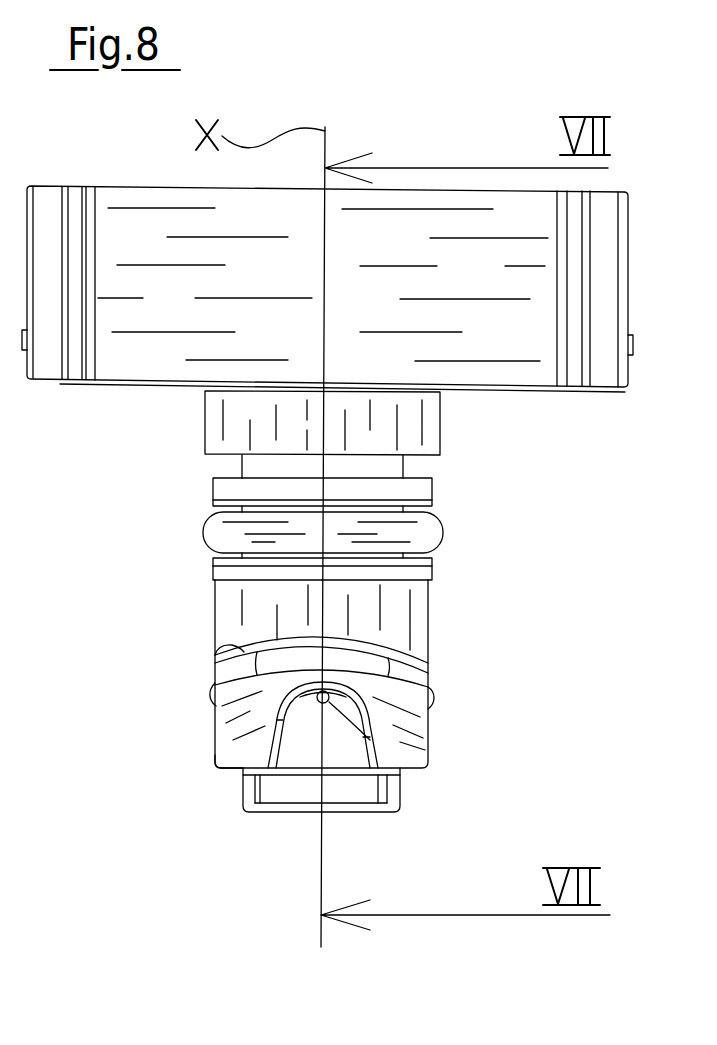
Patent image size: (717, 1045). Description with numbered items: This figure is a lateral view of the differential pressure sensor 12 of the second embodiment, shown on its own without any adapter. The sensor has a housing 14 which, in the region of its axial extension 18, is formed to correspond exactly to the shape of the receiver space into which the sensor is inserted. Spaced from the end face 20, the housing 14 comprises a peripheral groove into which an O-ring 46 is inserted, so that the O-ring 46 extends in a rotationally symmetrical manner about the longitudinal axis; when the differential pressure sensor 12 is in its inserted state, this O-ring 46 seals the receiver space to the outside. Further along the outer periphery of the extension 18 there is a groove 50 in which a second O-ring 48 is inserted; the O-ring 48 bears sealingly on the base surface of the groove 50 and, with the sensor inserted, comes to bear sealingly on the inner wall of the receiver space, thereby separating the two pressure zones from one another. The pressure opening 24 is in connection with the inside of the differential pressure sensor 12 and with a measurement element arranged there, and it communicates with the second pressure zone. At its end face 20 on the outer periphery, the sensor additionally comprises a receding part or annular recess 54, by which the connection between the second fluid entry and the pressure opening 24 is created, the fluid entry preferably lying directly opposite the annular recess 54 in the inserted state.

The differential pressure sensor 12 is at (635, 243).
The housing 14 is at (440, 445).
The O-ring 46 is at (433, 533).
The axial extension 18 is at (430, 627).
The O-ring 48 is at (430, 695).
The groove 50 is at (223, 645).
The pressure opening 24 is at (380, 762).
The end face 20 is at (347, 812).
The annular recess 54 is at (238, 777).